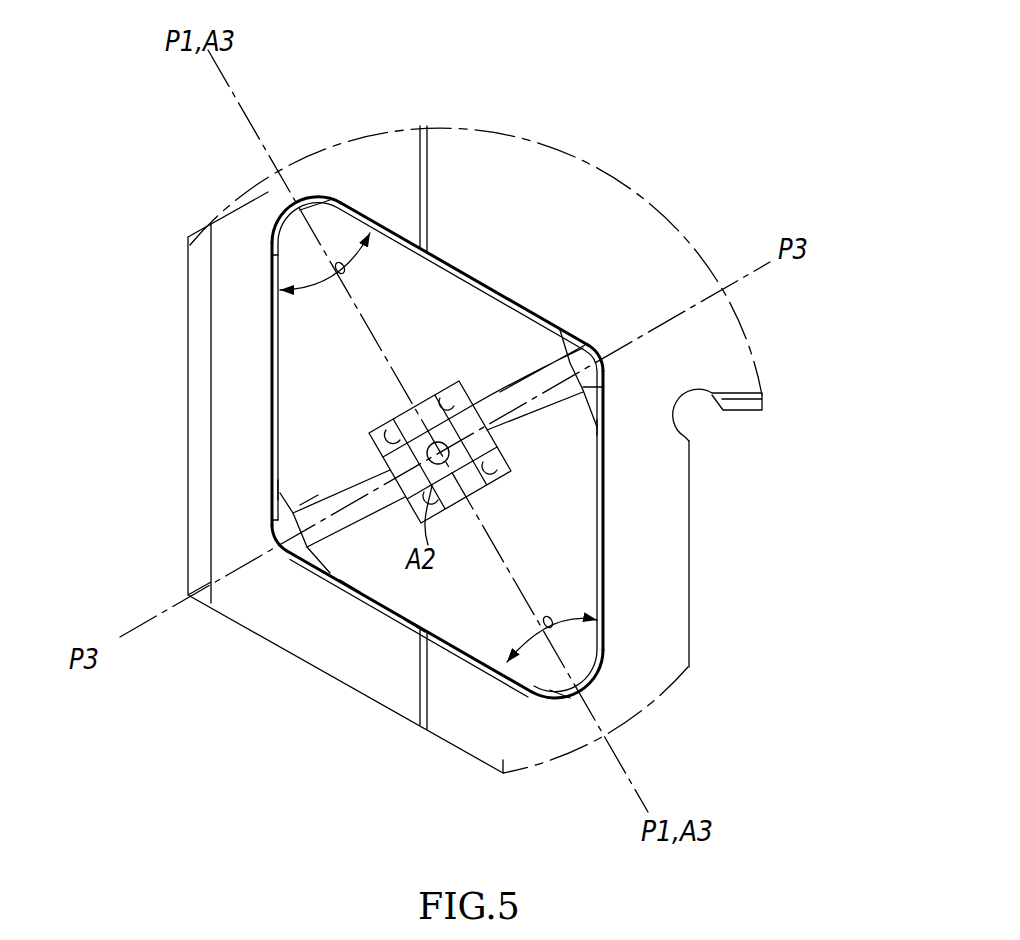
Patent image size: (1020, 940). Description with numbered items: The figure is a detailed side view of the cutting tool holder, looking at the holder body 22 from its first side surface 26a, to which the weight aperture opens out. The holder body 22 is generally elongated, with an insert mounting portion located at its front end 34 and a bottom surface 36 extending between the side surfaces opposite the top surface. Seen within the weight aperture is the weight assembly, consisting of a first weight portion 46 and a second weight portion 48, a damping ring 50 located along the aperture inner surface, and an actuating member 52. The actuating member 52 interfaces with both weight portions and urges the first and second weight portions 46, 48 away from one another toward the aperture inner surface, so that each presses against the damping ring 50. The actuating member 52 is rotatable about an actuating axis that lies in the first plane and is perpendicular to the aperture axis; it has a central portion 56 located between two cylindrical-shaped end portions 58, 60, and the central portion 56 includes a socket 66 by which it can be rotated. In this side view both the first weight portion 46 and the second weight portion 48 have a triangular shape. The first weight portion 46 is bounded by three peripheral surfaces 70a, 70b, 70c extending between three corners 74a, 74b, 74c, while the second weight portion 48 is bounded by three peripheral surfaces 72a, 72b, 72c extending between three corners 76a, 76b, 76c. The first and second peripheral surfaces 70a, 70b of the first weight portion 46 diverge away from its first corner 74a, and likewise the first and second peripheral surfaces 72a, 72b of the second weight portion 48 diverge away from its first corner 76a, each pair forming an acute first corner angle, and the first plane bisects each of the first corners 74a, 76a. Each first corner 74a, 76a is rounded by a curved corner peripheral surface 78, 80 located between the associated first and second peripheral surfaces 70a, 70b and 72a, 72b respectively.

The holder body 22 is at (577, 228).
The first side surface 26a is at (637, 597).
The front end 34 is at (186, 264).
The bottom surface 36 is at (745, 412).
The first weight portion 46 is at (412, 316).
The second weight portion 48 is at (565, 568).
The damping ring 50 is at (283, 548).
The actuating member 52 is at (600, 388).
The central portion 56 is at (572, 358).
The end portion 58 is at (425, 410).
The end portion 60 is at (600, 520).
The socket 66 is at (420, 455).
The first peripheral surface 70a is at (275, 360).
The second peripheral surface 70b is at (447, 262).
The third peripheral surface 70c is at (348, 521).
The first peripheral surface 72a is at (410, 627).
The second peripheral surface 72b is at (600, 553).
The third peripheral surface 72c is at (316, 498).
The first corner 74a is at (327, 240).
The second corner 74b is at (290, 487).
The third corner 74c is at (530, 355).
The first corner 76a is at (560, 692).
The second corner 76b is at (350, 575).
The third corner 76c is at (572, 427).
The curved corner peripheral surface 78 is at (288, 216).
The curved corner peripheral surface 80 is at (577, 650).